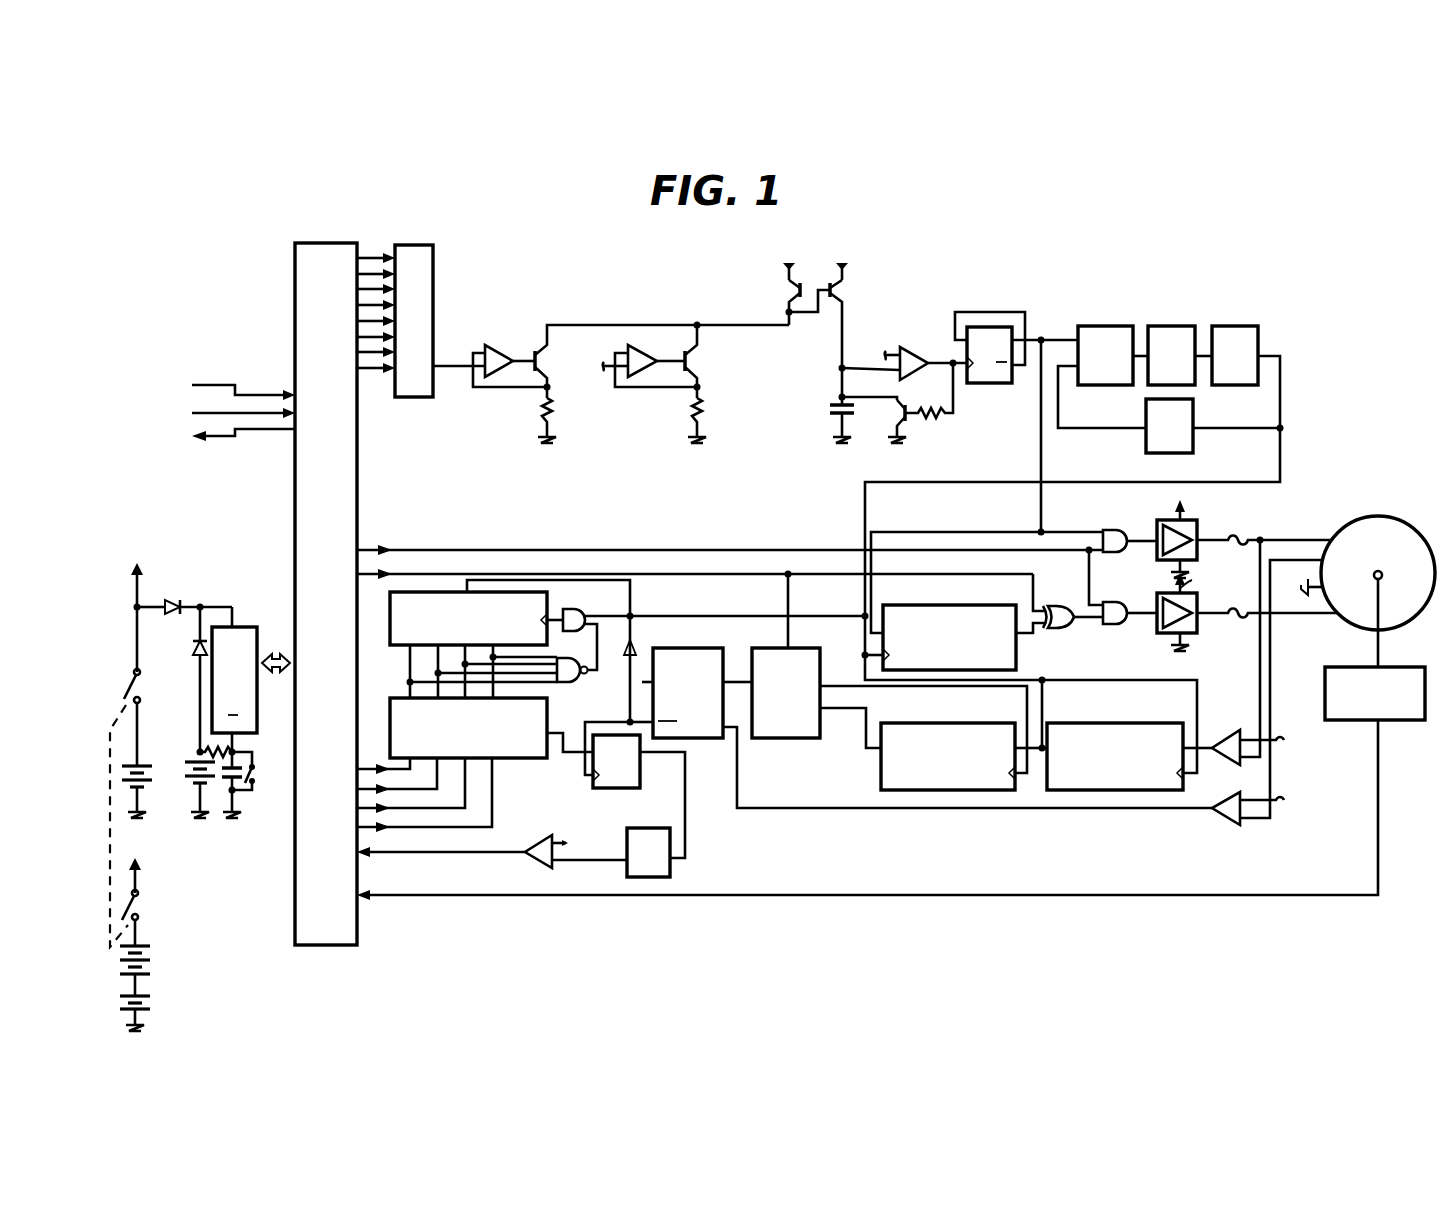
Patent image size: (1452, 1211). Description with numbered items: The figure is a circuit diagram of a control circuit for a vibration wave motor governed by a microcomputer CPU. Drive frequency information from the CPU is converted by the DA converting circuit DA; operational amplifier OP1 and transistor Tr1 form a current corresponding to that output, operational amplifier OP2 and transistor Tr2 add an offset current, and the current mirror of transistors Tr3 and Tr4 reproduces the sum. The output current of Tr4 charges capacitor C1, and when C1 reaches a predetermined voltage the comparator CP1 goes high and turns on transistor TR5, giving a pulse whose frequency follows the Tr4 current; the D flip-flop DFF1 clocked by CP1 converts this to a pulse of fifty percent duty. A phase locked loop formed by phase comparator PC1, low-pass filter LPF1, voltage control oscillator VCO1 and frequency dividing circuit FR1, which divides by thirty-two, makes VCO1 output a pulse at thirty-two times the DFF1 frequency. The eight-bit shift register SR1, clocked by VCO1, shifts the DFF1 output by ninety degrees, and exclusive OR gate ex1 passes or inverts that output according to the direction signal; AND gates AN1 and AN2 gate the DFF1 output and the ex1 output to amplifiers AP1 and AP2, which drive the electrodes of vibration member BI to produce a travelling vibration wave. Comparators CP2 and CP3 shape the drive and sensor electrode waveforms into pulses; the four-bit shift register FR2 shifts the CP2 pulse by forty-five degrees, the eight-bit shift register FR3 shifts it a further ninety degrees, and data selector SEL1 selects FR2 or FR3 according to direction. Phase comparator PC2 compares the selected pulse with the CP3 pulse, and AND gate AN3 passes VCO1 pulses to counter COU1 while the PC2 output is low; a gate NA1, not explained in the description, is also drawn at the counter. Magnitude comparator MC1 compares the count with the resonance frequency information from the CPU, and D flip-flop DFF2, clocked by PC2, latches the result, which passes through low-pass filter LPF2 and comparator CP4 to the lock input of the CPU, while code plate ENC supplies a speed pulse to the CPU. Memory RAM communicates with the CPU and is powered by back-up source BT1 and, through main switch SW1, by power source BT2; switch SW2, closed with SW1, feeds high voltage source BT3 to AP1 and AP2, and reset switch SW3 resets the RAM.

The microcomputer CPU is at (739, 582).
The DA converting circuit DA is at (440, 308).
The operational amplifier OP1 is at (492, 345).
The operational amplifier OP2 is at (642, 345).
The transistor Tr1 is at (550, 380).
The transistor Tr2 is at (695, 357).
The transistor Tr3 is at (790, 291).
The transistor Tr4 is at (846, 290).
The transistor TR5 is at (904, 424).
The capacitor C1 is at (833, 419).
The comparator CP1 is at (912, 347).
The D flip-flop DFF1 is at (990, 385).
The phase comparator PC1 is at (1093, 326).
The low-pass filter LPF1 is at (1166, 326).
The voltage control oscillator VCO1 is at (1240, 326).
The frequency dividing circuit FR1 is at (1142, 450).
The AND gate AN1 is at (1108, 531).
The AND gate AN2 is at (1112, 604).
The AND gate AN3 is at (572, 612).
The amplifier AP1 is at (1158, 528).
The amplifier AP2 is at (1198, 636).
The exclusive OR gate ex1 is at (1068, 627).
The 8-bit shift register SR1 is at (1017, 656).
The counter COU1 is at (432, 592).
The NAND gate NA1 is at (578, 683).
The magnitude comparator MC1 is at (508, 760).
The D type flip-flop DFF2 is at (596, 789).
The phase comparator PC2 is at (702, 740).
The data selector SEL1 is at (786, 740).
The 4-bit shift register FR2 is at (1106, 792).
The 8-bit shift register FR3 is at (948, 792).
The comparator CP2 is at (1222, 730).
The comparator CP3 is at (1222, 825).
The comparator CP4 is at (530, 860).
The low-pass filter LPF2 is at (672, 872).
The vibration member BI is at (1378, 518).
The code plate ENC is at (1354, 667).
The random access memory RAM is at (244, 625).
The main switch SW1 is at (140, 675).
The switch SW2 is at (140, 914).
The reset switch SW3 is at (258, 796).
The back-up power source BT1 is at (188, 788).
The power source BT2 is at (142, 760).
The high voltage source BT3 is at (150, 972).